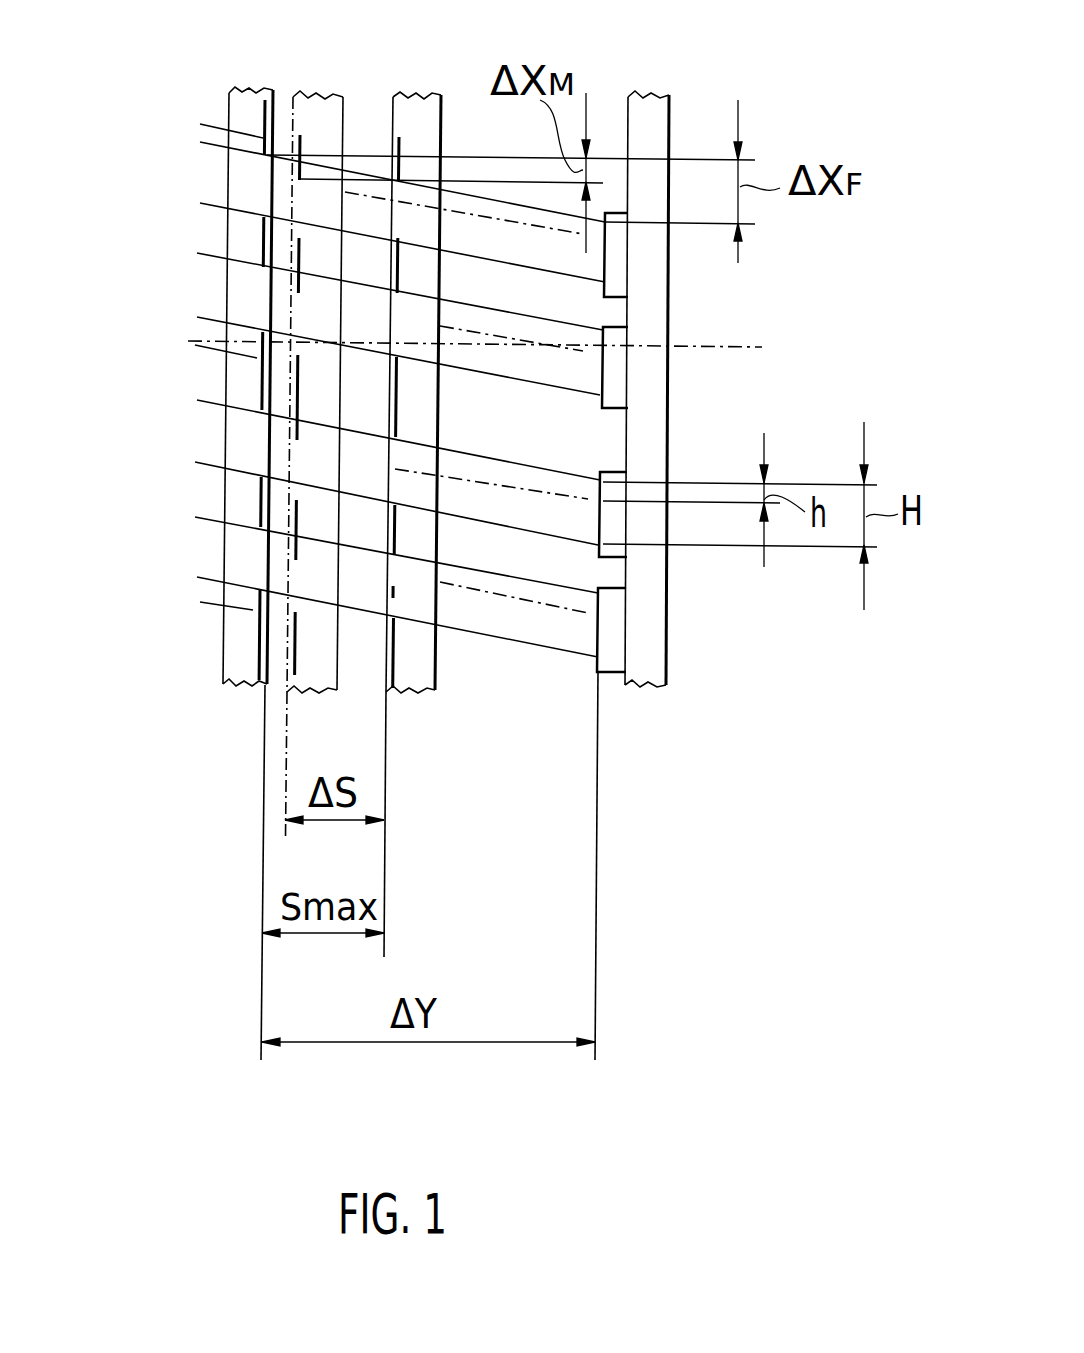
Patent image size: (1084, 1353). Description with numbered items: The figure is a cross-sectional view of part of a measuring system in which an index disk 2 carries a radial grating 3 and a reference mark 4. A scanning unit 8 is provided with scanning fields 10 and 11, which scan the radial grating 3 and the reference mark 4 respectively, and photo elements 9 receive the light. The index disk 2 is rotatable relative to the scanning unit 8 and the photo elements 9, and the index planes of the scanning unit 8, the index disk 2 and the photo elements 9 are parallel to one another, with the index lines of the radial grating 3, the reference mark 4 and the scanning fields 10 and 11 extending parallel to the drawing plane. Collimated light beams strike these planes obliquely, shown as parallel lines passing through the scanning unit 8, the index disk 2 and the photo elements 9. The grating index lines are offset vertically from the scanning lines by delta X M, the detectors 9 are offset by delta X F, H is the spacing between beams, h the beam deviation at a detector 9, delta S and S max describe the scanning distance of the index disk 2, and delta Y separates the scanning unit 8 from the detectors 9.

The index disk 2 is at (318, 112).
The radial grating 3 is at (397, 331).
The reference mark 4 is at (393, 592).
The scanning unit 8 is at (242, 100).
The photo elements 9 is at (617, 267).
The scanning field 10 is at (366, 390).
The scanning field 11 is at (252, 568).